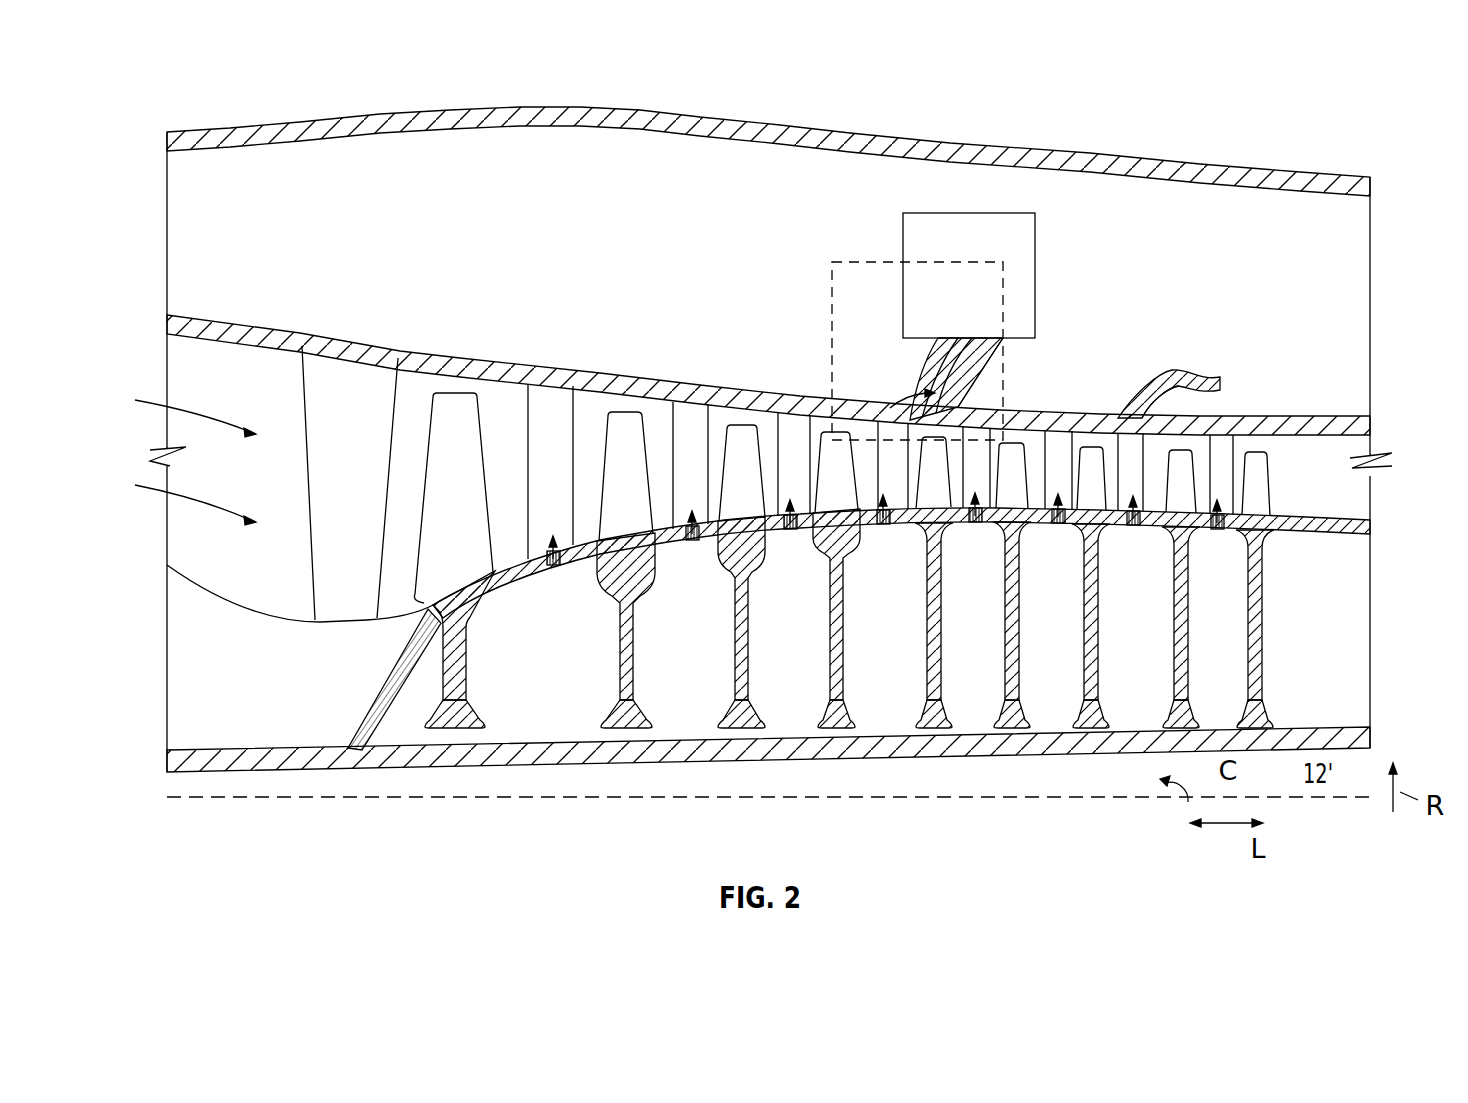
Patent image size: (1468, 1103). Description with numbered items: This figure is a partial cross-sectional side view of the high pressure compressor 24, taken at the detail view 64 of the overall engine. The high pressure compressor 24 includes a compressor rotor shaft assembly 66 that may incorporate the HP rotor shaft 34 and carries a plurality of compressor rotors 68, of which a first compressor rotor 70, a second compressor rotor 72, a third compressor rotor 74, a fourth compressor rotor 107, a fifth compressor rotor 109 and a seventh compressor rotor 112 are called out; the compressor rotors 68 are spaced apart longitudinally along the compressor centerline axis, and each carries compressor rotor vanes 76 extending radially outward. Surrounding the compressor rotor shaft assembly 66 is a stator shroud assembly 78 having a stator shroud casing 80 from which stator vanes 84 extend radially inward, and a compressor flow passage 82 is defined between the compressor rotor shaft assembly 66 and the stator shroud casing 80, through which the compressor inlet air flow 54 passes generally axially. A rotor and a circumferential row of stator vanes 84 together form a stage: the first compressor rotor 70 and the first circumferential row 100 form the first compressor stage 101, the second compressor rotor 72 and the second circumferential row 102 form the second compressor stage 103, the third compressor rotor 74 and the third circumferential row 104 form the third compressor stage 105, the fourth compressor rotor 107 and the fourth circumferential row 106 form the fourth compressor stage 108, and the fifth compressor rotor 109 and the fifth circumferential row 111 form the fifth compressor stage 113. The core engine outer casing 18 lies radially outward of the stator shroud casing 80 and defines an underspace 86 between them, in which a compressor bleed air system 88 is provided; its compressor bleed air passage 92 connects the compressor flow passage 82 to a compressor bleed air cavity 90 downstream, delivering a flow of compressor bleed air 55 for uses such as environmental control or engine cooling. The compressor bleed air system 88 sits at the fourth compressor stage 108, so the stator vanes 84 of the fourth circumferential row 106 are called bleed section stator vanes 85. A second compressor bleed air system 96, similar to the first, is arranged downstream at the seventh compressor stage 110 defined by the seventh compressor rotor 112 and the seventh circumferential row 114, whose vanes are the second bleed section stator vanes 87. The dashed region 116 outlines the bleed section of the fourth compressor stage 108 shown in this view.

The core engine outer casing 18 is at (418, 119).
The high pressure compressor 24 is at (1374, 680).
The underspace 86 is at (516, 163).
The detail view 64 is at (1038, 128).
The stator shroud assembly 78 is at (409, 351).
The HP rotor shaft 34 is at (560, 758).
The compressor flow passage 82 is at (176, 410).
The compressor inlet air flow 54 is at (176, 495).
The stator shroud casing 80 is at (345, 360).
The compressor rotor shaft assembly 66 is at (376, 702).
The compressor rotor vanes 76 is at (454, 398).
The first circumferential row 100 is at (550, 405).
The first compressor stage 101 is at (496, 404).
The second circumferential row 102 is at (692, 421).
The second compressor stage 103 is at (657, 424).
The third compressor stage 105 is at (790, 424).
The third circumferential row 104 is at (797, 406).
The fourth circumferential row 106 is at (897, 431).
The fourth compressor stage 108 is at (867, 434).
The seventh compressor stage 110 is at (1105, 441).
The bleed system region 116 is at (855, 262).
The compressor bleed air cavity 90 is at (1020, 240).
The compressor bleed air passage 92 is at (905, 400).
The compressor bleed air system 88 is at (995, 348).
The fifth circumferential row 111 is at (964, 352).
The compressor bleed air 55 is at (913, 410).
The second compressor bleed air system 96 is at (1205, 385).
The seventh circumferential row 114 is at (1150, 410).
The compressor rotors 68 is at (468, 683).
The first compressor rotor 70 is at (457, 717).
The second compressor rotor 72 is at (624, 715).
The third compressor rotor 74 is at (739, 715).
The fourth compressor rotor 107 is at (835, 715).
The fifth compressor rotor 109 is at (933, 715).
The seventh compressor rotor 112 is at (1090, 715).
The stator vanes 84 is at (553, 567).
The bleed section stator vanes 85 is at (881, 526).
The second bleed section stator vanes 87 is at (1137, 527).
The fifth compressor stage 113 is at (947, 545).